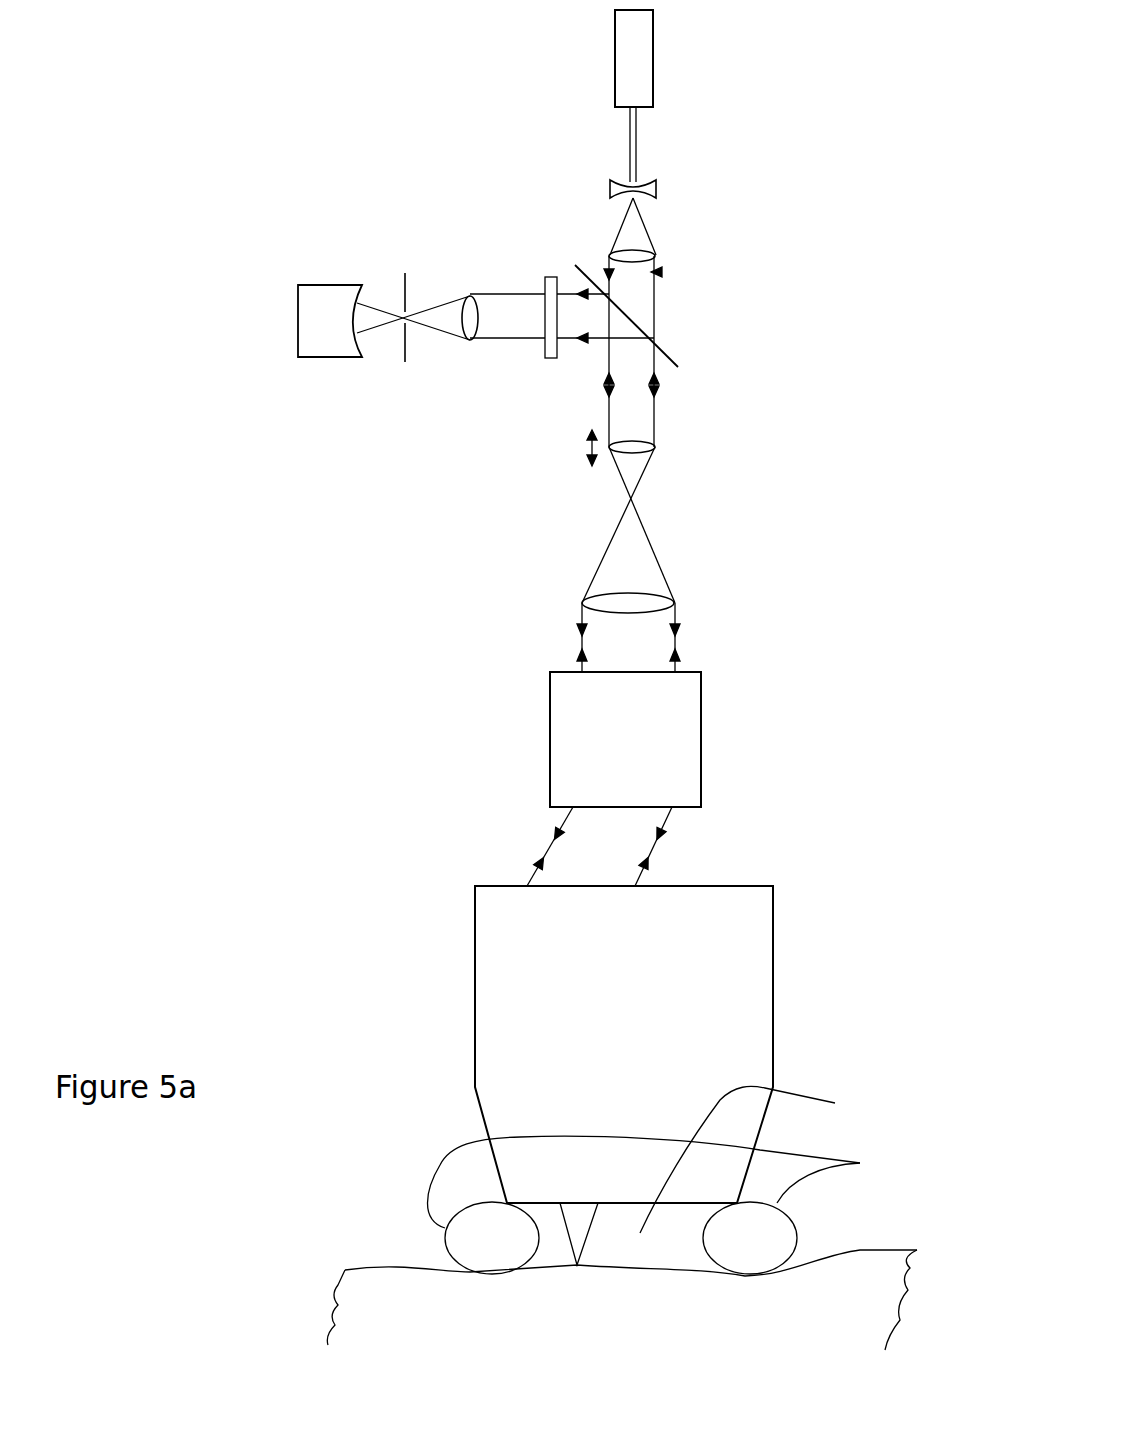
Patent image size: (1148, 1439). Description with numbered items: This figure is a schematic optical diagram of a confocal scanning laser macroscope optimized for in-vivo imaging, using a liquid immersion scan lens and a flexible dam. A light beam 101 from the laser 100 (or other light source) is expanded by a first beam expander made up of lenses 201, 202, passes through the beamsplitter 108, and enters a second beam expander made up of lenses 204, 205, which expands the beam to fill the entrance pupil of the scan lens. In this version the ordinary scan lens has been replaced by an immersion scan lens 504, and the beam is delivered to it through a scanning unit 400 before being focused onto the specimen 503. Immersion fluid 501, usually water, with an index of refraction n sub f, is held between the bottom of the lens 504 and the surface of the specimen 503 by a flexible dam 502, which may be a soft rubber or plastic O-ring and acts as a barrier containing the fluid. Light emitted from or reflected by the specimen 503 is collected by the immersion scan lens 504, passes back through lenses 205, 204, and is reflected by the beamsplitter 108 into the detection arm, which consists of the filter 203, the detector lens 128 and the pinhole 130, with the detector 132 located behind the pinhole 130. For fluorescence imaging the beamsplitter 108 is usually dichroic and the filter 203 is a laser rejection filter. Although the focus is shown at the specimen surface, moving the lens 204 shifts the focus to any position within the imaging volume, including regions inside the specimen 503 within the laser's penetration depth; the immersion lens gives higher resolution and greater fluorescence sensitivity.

The laser 100 is at (653, 40).
The light beam 101 is at (637, 138).
The lens of first beam expander 201 is at (657, 190).
The lens of first beam expander 202 is at (655, 256).
The beamsplitter 108 is at (665, 350).
The filter 203 is at (550, 360).
The detector lens 128 is at (470, 295).
The pinhole 130 is at (405, 273).
The detector 132 is at (327, 285).
The lens of second beam expander 204 is at (654, 447).
The lens of second beam expander 205 is at (675, 603).
The scanner 400 is at (701, 725).
The immersion scan lens 504 is at (773, 1012).
The fluid 502 is at (766, 1159).
The immersion fluid 501 is at (678, 1182).
The specimen 503 is at (382, 1265).